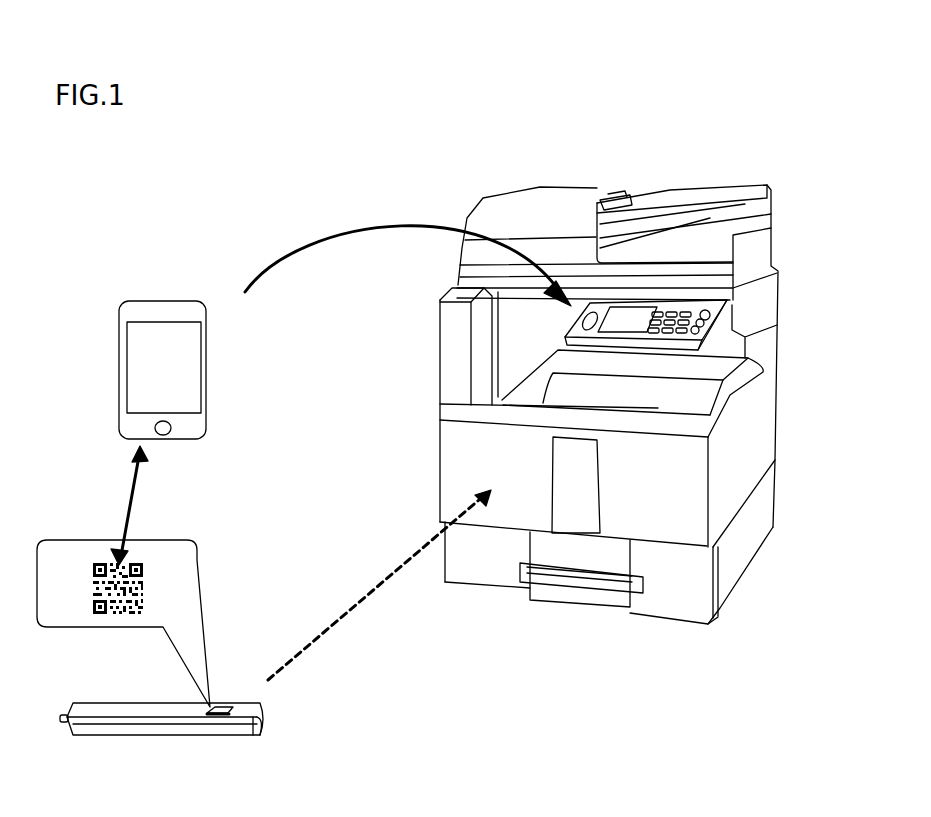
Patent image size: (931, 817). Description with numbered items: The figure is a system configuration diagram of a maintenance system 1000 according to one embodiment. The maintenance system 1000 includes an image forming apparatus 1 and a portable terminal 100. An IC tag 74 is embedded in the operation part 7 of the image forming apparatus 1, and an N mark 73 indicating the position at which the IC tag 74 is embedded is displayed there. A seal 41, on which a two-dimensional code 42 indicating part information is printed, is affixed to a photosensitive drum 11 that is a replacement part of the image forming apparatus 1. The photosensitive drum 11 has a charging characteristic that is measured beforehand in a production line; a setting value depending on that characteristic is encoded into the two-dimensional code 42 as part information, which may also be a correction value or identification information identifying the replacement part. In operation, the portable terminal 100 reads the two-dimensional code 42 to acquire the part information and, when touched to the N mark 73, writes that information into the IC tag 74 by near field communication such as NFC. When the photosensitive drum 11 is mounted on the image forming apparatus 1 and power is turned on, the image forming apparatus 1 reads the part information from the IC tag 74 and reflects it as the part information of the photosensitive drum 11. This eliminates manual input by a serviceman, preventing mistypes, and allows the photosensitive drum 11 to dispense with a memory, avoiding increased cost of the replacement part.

The maintenance system 1000 is at (427, 85).
The image forming apparatus 1 is at (583, 182).
The operation part 7 is at (735, 301).
The N mark 73 is at (592, 302).
The IC tag 74 is at (585, 298).
The portable terminal 100 is at (158, 299).
The photosensitive drum 11 is at (108, 705).
The seal 41 is at (220, 704).
The two-dimensional code 42 is at (135, 588).